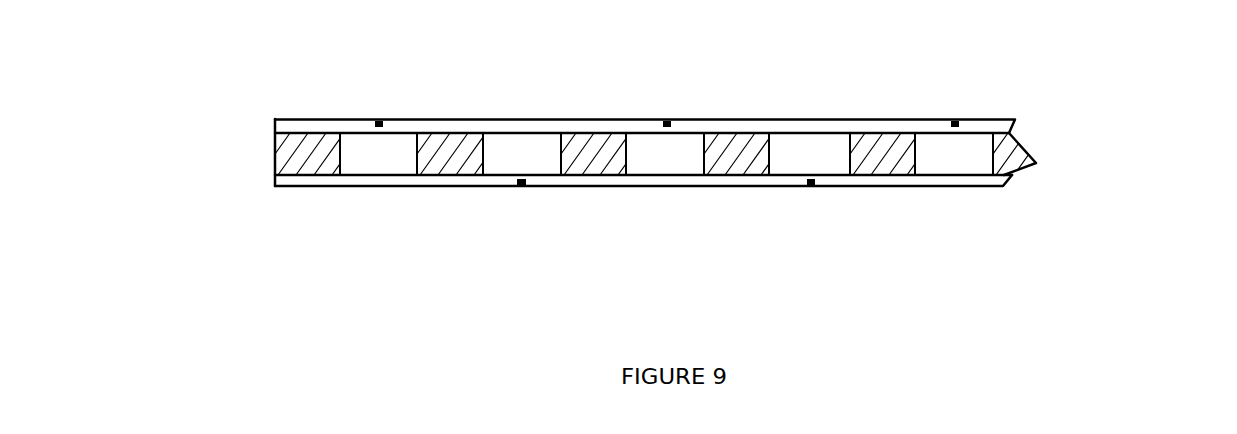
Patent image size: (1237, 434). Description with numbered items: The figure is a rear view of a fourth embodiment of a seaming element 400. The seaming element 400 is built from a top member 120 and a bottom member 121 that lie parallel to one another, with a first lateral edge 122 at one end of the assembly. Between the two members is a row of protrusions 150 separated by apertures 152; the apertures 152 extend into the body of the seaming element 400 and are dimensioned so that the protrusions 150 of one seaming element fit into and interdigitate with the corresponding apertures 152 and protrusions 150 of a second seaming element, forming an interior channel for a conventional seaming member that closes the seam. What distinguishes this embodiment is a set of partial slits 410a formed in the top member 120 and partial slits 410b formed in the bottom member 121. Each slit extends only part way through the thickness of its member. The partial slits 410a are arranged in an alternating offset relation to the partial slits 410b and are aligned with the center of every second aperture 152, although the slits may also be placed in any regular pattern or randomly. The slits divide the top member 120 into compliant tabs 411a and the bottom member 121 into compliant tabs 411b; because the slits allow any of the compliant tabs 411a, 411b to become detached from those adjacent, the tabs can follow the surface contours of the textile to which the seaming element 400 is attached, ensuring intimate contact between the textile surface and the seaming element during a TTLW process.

The seaming element 400 is at (1065, 123).
The top member 120 is at (903, 120).
The bottom member 121 is at (905, 186).
The first lateral edge 122 is at (275, 152).
The protrusion 150 is at (737, 155).
The aperture 152 is at (665, 155).
The partial slit 410a is at (378, 119).
The partial slit 410b is at (523, 186).
The compliant tab 411a is at (525, 125).
The compliant tab 411b is at (373, 186).